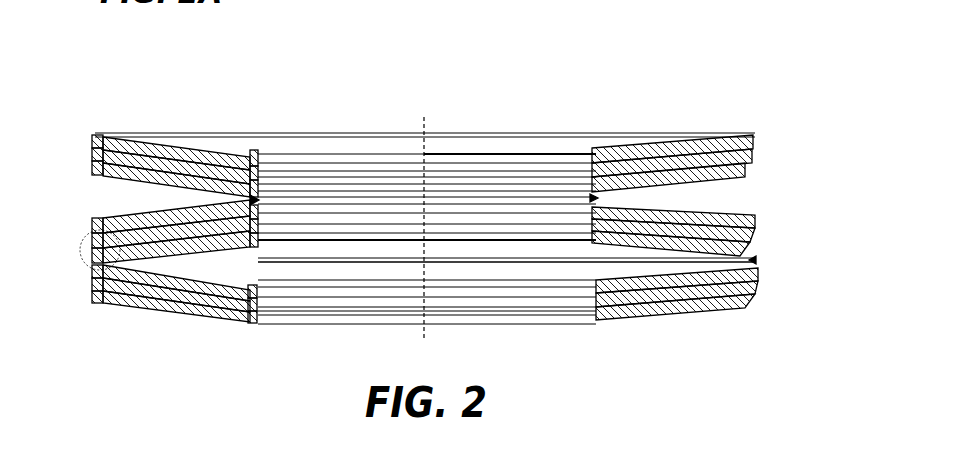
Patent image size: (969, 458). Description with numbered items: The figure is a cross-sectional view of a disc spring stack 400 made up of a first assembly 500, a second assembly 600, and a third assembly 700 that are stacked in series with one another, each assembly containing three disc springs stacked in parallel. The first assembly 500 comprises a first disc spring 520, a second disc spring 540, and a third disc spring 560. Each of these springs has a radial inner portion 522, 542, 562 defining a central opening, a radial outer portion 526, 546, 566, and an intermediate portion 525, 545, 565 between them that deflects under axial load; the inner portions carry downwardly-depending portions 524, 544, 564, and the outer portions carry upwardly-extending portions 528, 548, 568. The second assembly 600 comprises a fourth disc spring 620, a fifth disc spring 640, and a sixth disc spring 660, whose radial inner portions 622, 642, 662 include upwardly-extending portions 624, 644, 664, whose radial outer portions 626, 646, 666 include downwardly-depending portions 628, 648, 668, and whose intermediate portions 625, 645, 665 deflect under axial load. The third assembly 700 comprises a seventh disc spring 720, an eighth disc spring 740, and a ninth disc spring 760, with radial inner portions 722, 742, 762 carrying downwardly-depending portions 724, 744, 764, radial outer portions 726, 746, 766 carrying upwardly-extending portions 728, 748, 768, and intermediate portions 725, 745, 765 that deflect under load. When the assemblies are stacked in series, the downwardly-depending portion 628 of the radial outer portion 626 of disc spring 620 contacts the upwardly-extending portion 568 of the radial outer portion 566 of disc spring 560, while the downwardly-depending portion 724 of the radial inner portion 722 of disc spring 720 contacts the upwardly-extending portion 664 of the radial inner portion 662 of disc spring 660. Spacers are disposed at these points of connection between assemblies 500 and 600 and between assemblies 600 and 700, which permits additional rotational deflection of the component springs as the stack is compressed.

The disc spring stack 400 is at (463, 81).
The third assembly 700 is at (808, 103).
The ninth disc spring 760 is at (755, 143).
The eighth disc spring 740 is at (755, 157).
The seventh disc spring 720 is at (750, 170).
The third radial outer portion 766 is at (104, 138).
The second radial outer portion 746 is at (108, 153).
The first radial outer portion 726 is at (108, 167).
The upwardly-extending portion 768 is at (93, 141).
The upwardly-extending portion 748 is at (93, 154).
The upwardly-extending portion 728 is at (93, 168).
The third radial inner portion 762 is at (253, 152).
The second radial inner portion 742 is at (247, 170).
The first radial inner portion 722 is at (244, 184).
The downwardly-depending portion 764 is at (259, 156).
The downwardly-depending portion 744 is at (259, 166).
The downwardly-depending portion 724 is at (259, 178).
The third intermediate portion 765 is at (721, 143).
The second intermediate portion 745 is at (698, 160).
The first intermediate portion 725 is at (681, 175).
The second assembly 600 is at (808, 195).
The sixth disc spring 660 is at (756, 228).
The fifth disc spring 640 is at (752, 241).
The fourth disc spring 620 is at (745, 254).
The third radial outer portion 666 is at (97, 220).
The second radial outer portion 646 is at (106, 232).
The first radial outer portion 626 is at (105, 249).
The downwardly-depending portion 668 is at (93, 229).
The downwardly-depending portion 648 is at (93, 243).
The downwardly-depending portion 628 is at (93, 258).
The third radial inner portion 662 is at (246, 208).
The second radial inner portion 642 is at (246, 229).
The first radial inner portion 622 is at (252, 241).
The upwardly-extending portion 664 is at (259, 239).
The upwardly-extending portion 644 is at (259, 232).
The upwardly-extending portion 624 is at (259, 226).
The third intermediate portion 665 is at (613, 205).
The second intermediate portion 645 is at (637, 220).
The first intermediate portion 625 is at (660, 238).
The first assembly 500 is at (808, 262).
The third disc spring 560 is at (759, 270).
The second disc spring 540 is at (757, 284).
The first disc spring 520 is at (750, 297).
The third radial outer portion 566 is at (109, 280).
The second radial outer portion 546 is at (106, 291).
The first radial outer portion 526 is at (101, 302).
The upwardly-extending portion 568 is at (93, 268).
The upwardly-extending portion 548 is at (93, 281).
The upwardly-extending portion 528 is at (93, 294).
The third radial inner portion 562 is at (252, 291).
The second radial inner portion 542 is at (253, 303).
The first radial inner portion 522 is at (253, 319).
The downwardly-depending portion 564 is at (248, 290).
The downwardly-depending portion 544 is at (248, 303).
The downwardly-depending portion 524 is at (247, 322).
The third intermediate portion 565 is at (635, 288).
The second intermediate portion 545 is at (664, 296).
The first intermediate portion 525 is at (693, 308).